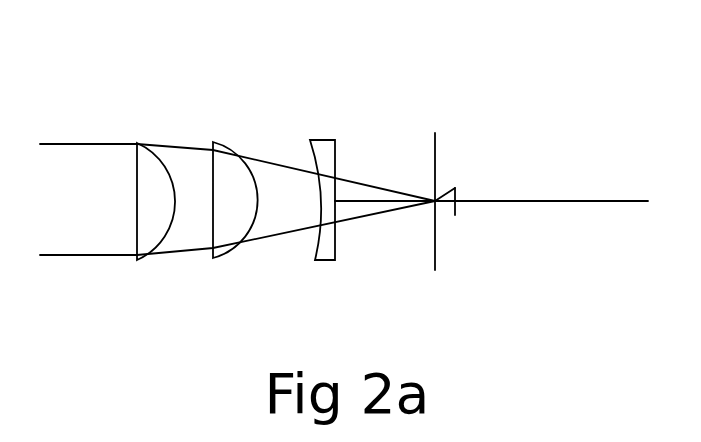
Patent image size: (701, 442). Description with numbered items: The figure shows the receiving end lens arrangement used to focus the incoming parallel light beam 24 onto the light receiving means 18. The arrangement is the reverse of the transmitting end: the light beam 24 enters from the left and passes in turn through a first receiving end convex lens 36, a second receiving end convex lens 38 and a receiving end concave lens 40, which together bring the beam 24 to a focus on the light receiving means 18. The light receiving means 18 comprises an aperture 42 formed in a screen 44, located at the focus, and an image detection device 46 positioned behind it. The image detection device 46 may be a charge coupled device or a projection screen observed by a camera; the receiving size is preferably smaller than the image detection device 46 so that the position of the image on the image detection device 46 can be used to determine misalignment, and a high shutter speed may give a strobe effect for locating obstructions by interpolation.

The light receiving means 18 is at (473, 165).
The parallel light beam 24 is at (63, 162).
The first receiving end convex lens 36 is at (127, 233).
The second receiving end convex lens 38 is at (185, 233).
The receiving end concave lens 40 is at (330, 252).
The aperture 42 is at (432, 205).
The screen 44 is at (445, 255).
The image detection device 46 is at (435, 201).